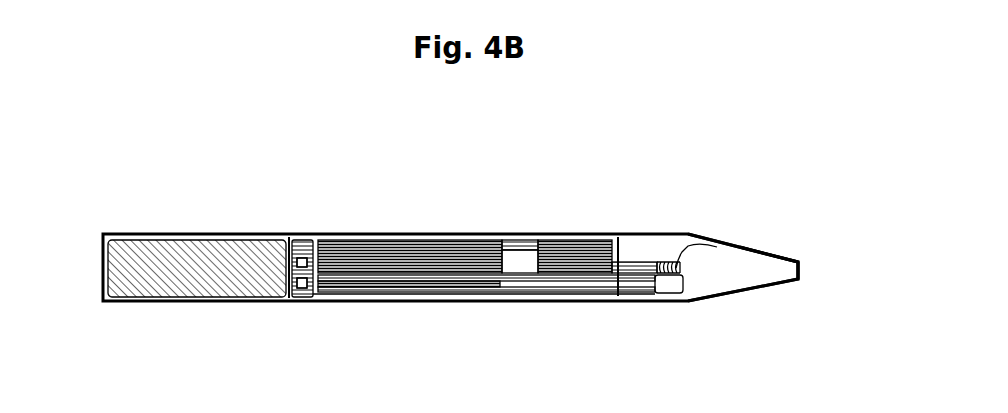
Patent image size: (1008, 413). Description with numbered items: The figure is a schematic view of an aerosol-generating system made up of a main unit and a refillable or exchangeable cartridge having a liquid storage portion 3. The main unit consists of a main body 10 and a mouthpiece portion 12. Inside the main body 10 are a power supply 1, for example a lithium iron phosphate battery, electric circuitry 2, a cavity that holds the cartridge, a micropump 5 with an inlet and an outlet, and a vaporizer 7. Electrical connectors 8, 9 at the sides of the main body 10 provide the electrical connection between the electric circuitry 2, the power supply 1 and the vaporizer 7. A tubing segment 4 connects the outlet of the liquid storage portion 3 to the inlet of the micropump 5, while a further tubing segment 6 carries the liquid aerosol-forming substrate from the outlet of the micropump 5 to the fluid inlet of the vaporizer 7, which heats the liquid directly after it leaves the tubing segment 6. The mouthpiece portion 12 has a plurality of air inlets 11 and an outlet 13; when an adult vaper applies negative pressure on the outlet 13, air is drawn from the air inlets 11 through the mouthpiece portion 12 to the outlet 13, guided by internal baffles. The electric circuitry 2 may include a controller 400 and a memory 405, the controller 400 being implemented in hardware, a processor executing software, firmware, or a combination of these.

The power supply 1 is at (140, 248).
The electric circuitry 2 is at (300, 250).
The liquid storage portion 3 is at (378, 250).
The tubing segment 4 is at (520, 250).
The micropump 5 is at (567, 250).
The tubing segment 6 is at (642, 234).
The vaporizer 7 is at (726, 245).
The electrical connector 8 is at (600, 293).
The electrical connector 9 is at (537, 281).
The main body 10 is at (420, 294).
The air inlets 11 is at (633, 262).
The mouthpiece portion 12 is at (755, 248).
The outlet 13 is at (800, 266).
The controller 400 is at (300, 264).
The memory 405 is at (298, 296).